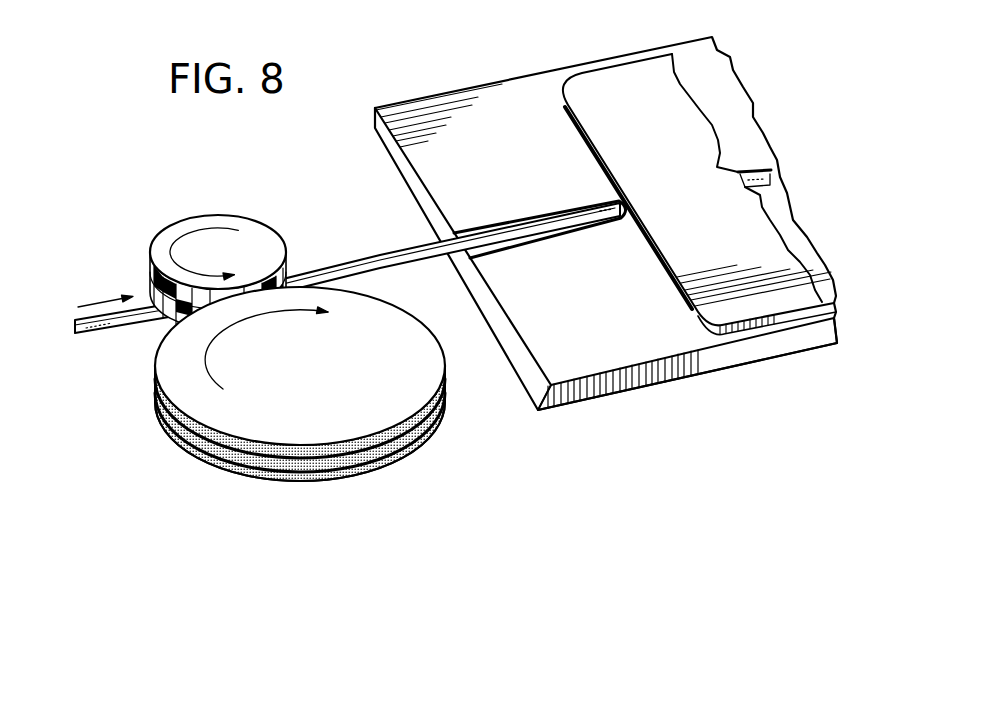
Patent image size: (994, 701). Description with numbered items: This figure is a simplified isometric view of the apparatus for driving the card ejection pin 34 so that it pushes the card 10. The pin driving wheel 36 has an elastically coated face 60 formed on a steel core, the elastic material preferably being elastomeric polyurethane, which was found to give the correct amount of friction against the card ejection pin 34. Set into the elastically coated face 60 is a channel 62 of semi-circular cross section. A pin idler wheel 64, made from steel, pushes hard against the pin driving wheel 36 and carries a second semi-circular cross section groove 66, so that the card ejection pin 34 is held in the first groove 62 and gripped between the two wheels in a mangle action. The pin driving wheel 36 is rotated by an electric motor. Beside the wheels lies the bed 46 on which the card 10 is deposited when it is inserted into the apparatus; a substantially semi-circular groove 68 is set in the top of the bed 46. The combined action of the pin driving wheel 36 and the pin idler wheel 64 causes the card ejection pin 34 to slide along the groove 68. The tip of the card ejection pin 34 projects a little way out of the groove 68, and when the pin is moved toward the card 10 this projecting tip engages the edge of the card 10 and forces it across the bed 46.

The card 10 is at (606, 217).
The card ejection pin 34 is at (418, 250).
The pin driving wheel 36 is at (417, 372).
The bed 46 is at (650, 373).
The elastically coated face 60 is at (272, 424).
The semi-circular cross section channel 62 is at (197, 452).
The pin idler wheel 64 is at (254, 232).
The second semi-circular cross section groove 66 is at (158, 289).
The semi-circular groove 68 is at (573, 212).